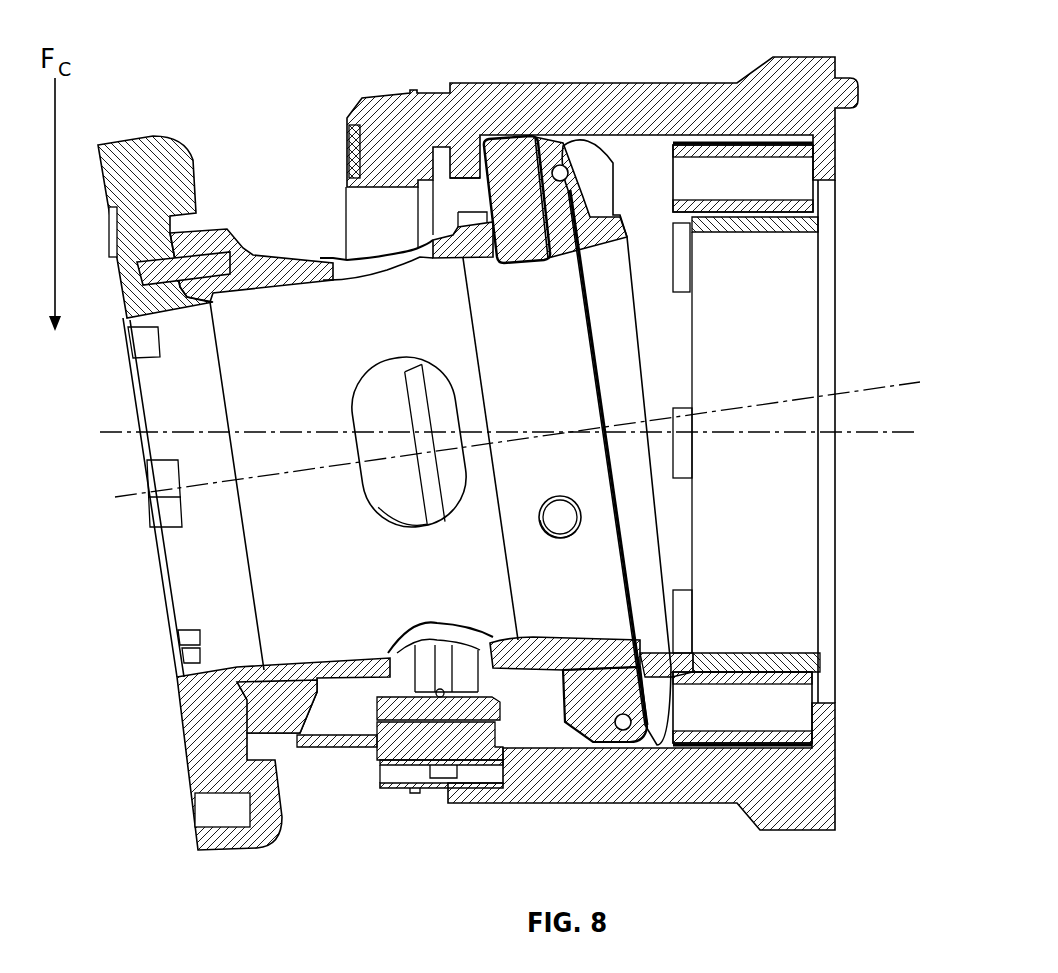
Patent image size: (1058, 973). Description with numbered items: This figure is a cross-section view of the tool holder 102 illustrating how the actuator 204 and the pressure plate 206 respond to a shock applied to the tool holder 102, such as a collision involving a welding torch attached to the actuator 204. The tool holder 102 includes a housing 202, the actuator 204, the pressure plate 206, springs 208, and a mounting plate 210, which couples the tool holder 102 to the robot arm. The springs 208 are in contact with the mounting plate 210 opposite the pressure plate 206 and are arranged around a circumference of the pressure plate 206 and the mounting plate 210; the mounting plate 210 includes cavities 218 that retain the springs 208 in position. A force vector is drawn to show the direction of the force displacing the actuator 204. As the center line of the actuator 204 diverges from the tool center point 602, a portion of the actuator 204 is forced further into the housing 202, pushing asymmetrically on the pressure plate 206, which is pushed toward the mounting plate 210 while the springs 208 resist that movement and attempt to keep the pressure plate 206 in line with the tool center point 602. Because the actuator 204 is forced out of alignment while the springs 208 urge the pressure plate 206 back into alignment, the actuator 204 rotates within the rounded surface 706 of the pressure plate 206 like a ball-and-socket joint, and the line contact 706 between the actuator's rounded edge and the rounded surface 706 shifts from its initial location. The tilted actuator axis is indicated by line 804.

The tool holder 102 is at (163, 34).
The housing 202 is at (472, 806).
The actuator 204 is at (318, 313).
The pressure plate 206 is at (580, 163).
The springs 208 is at (802, 182).
The mounting plate 210 is at (825, 287).
The cavities 218 is at (803, 153).
The tool center point 602 is at (873, 433).
The rounded surface 706 is at (558, 164).
The tilted axis 804 is at (877, 388).